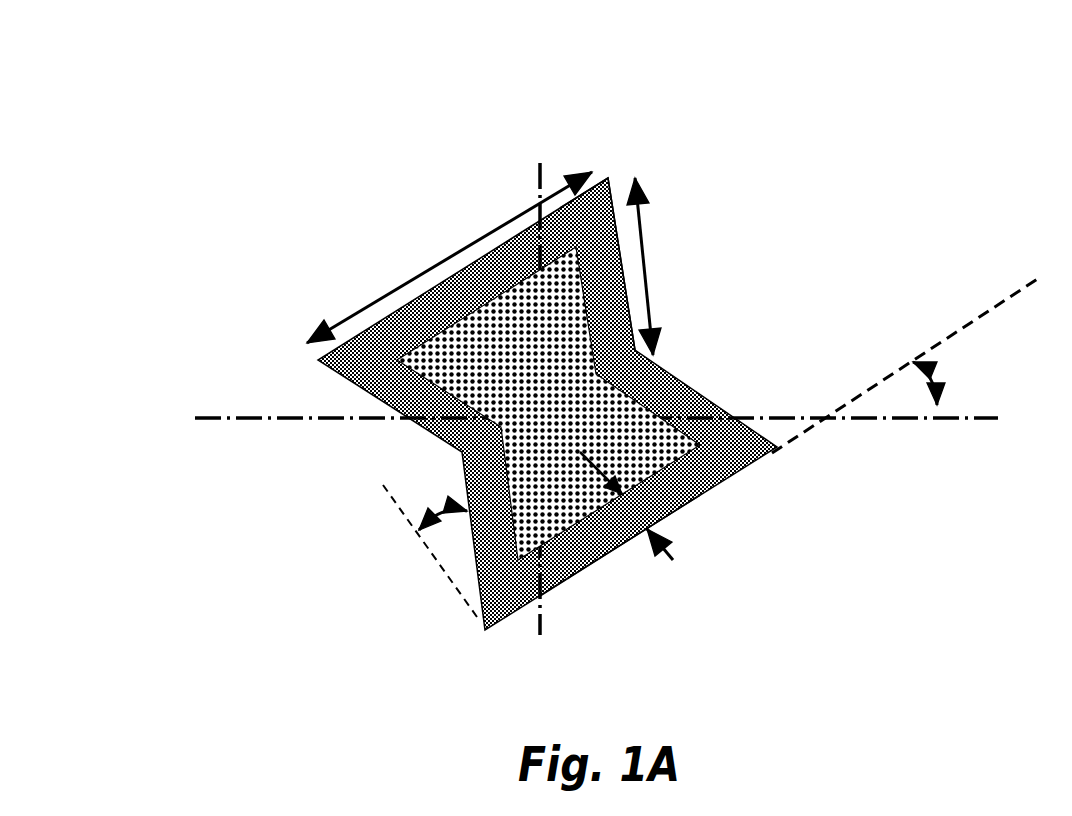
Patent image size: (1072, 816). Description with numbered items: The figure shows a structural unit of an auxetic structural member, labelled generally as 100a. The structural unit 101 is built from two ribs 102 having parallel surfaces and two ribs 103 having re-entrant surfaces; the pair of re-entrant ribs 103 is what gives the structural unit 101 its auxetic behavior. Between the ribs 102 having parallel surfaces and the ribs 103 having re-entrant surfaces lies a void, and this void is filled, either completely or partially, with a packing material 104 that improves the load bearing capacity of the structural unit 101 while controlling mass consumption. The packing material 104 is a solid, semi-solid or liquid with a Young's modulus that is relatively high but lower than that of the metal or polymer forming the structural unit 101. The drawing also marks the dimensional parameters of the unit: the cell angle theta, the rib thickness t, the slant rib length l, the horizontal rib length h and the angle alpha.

The interlocking element 100a is at (598, 367).
The structural unit 101 is at (732, 479).
The ribs having parallel surfaces 102 is at (606, 173).
The ribs having re-entrant surfaces 103 is at (681, 380).
The packing material 104 is at (488, 367).